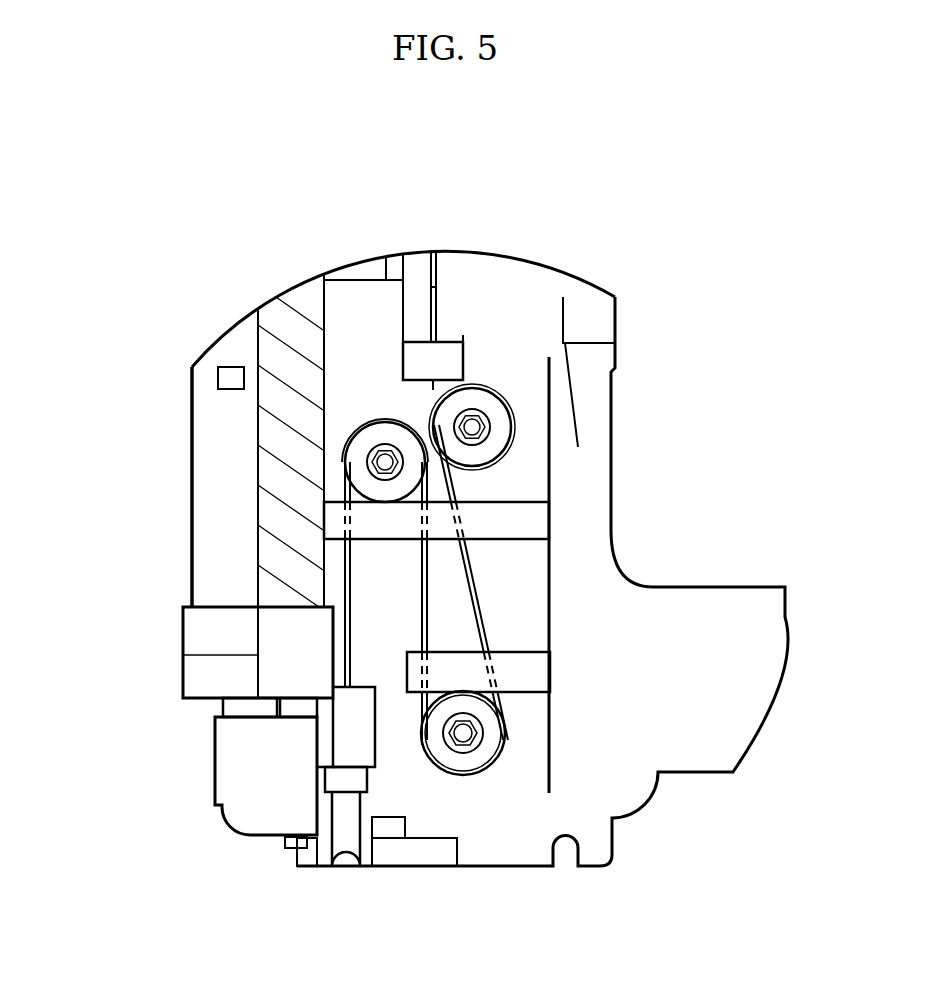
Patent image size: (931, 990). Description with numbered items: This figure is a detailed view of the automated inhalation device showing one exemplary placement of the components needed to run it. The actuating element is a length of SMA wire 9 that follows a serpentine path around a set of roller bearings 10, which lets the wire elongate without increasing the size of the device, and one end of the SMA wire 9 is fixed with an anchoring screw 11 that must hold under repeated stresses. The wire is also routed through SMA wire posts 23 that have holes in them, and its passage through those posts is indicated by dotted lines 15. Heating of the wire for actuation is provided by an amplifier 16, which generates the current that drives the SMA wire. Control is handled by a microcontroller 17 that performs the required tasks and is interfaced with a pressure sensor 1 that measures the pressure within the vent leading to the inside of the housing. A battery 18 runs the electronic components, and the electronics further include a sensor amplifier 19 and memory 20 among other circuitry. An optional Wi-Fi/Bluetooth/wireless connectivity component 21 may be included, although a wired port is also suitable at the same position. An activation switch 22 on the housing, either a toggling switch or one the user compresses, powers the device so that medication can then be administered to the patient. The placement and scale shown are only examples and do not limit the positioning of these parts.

The pressure sensor 1 is at (408, 857).
The SMA wire 9 is at (487, 606).
The roller bearings 10 is at (511, 386).
The anchoring screw 11 is at (376, 782).
The dotted lines 15 is at (479, 518).
The amplifier 16 is at (330, 745).
The microcontroller 17 is at (218, 682).
The battery 18 is at (278, 322).
The sensor amplifier 19 is at (388, 823).
The memory 20 is at (182, 653).
The Wi-Fi/Bluetooth/wireless connectivity component 21 is at (190, 530).
The activation switch 22 is at (217, 372).
The SMA wire posts 23 is at (537, 665).